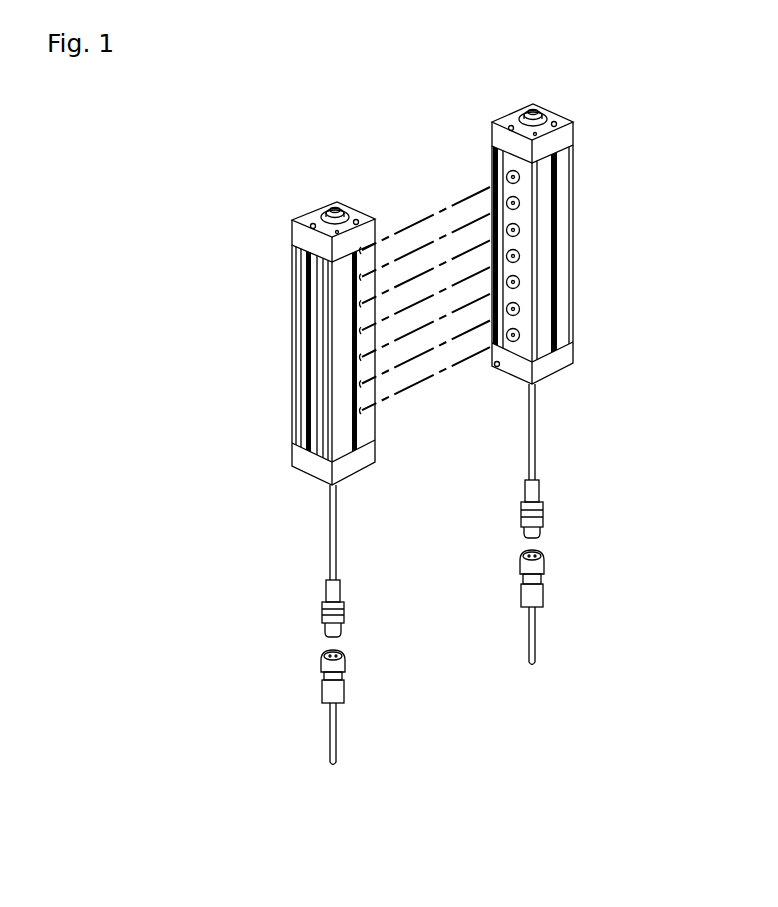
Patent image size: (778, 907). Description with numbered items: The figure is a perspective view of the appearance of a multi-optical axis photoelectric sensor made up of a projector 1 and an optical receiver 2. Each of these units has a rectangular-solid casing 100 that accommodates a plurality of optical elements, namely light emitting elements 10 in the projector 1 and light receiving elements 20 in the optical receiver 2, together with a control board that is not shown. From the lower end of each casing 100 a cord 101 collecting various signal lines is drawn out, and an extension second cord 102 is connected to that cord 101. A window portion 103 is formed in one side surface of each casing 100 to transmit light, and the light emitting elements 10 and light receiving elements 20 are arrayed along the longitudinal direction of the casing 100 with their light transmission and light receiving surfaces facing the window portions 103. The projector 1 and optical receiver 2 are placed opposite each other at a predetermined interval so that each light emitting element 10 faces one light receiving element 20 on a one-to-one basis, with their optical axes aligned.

The projector 1 is at (296, 323).
The optical receiver 2 is at (550, 223).
The light emitting element 10 is at (372, 241).
The light receiving element 20 is at (519, 180).
The casing 100 is at (292, 346).
The cord 101 is at (332, 527).
The extension second cord 102 is at (331, 727).
The window portion 103 is at (523, 296).